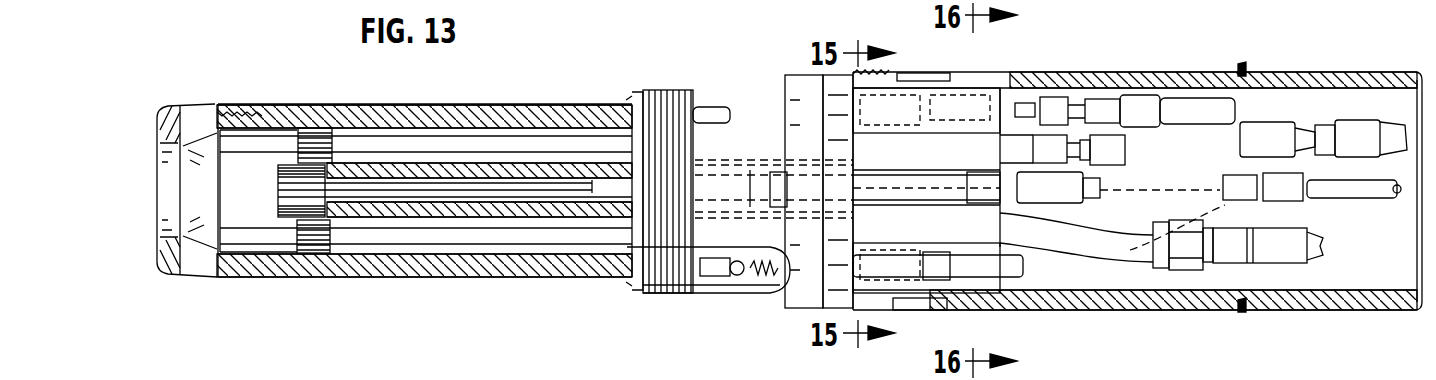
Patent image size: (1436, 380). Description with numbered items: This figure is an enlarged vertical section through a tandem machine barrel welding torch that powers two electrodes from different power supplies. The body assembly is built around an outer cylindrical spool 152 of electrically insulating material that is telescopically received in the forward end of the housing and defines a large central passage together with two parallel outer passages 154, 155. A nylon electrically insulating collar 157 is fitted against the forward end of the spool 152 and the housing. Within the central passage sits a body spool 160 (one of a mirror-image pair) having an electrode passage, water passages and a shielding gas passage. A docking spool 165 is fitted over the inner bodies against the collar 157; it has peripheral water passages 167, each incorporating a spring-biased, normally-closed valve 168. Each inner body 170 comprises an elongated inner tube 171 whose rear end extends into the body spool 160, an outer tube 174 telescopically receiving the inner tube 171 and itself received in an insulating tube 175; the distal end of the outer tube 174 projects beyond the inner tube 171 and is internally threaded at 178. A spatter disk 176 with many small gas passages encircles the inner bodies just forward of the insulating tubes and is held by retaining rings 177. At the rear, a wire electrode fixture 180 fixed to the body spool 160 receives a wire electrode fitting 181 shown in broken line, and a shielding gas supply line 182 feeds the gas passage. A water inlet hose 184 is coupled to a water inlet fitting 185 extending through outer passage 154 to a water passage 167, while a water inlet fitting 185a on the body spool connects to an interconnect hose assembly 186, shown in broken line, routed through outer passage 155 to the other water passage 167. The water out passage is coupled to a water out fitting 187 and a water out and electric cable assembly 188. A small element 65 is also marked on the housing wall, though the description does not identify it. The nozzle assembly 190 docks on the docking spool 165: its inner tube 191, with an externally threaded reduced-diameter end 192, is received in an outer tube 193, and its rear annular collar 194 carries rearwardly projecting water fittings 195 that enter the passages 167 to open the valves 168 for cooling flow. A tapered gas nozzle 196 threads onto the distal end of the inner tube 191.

The retaining tab 65 is at (1246, 65).
The outer cylindrical spool 152 is at (983, 288).
The outer passage 154 is at (975, 95).
The outer passage 155 is at (965, 278).
The electrically insulating collar 157 is at (823, 74).
The body spool 160 is at (907, 157).
The docking spool 165 is at (785, 82).
The peripheral water passage 167 is at (772, 296).
The spring-biased, normally-closed valve 168 is at (738, 278).
The inner body 170 is at (507, 230).
The inner tube 171 is at (433, 255).
The outer tube 174 is at (563, 212).
The insulating tube 175 is at (533, 167).
The spatter disk 176 is at (332, 128).
The retaining ring 177 is at (297, 232).
The internal thread 178 is at (278, 205).
The wire electrode fixture 180 is at (1112, 195).
The wire electrode fitting 181 is at (1355, 125).
The shielding gas supply line 182 is at (1367, 203).
The water inlet hose 184 is at (1215, 107).
The water inlet fitting 185 is at (1028, 112).
The water inlet fitting 185a is at (1058, 99).
The interconnect hose assembly 186 is at (1182, 150).
The water out fitting 187 is at (1140, 247).
The water out and electric cable assembly 188 is at (1277, 257).
The nozzle assembly 190 is at (472, 106).
The inner tube 191 is at (368, 258).
The externally threaded, reduced-diameter end 192 is at (222, 272).
The outer tube 193 is at (397, 106).
The annular collar 194 is at (626, 100).
The water fitting 195 is at (706, 110).
The tapered gas nozzle 196 is at (178, 105).